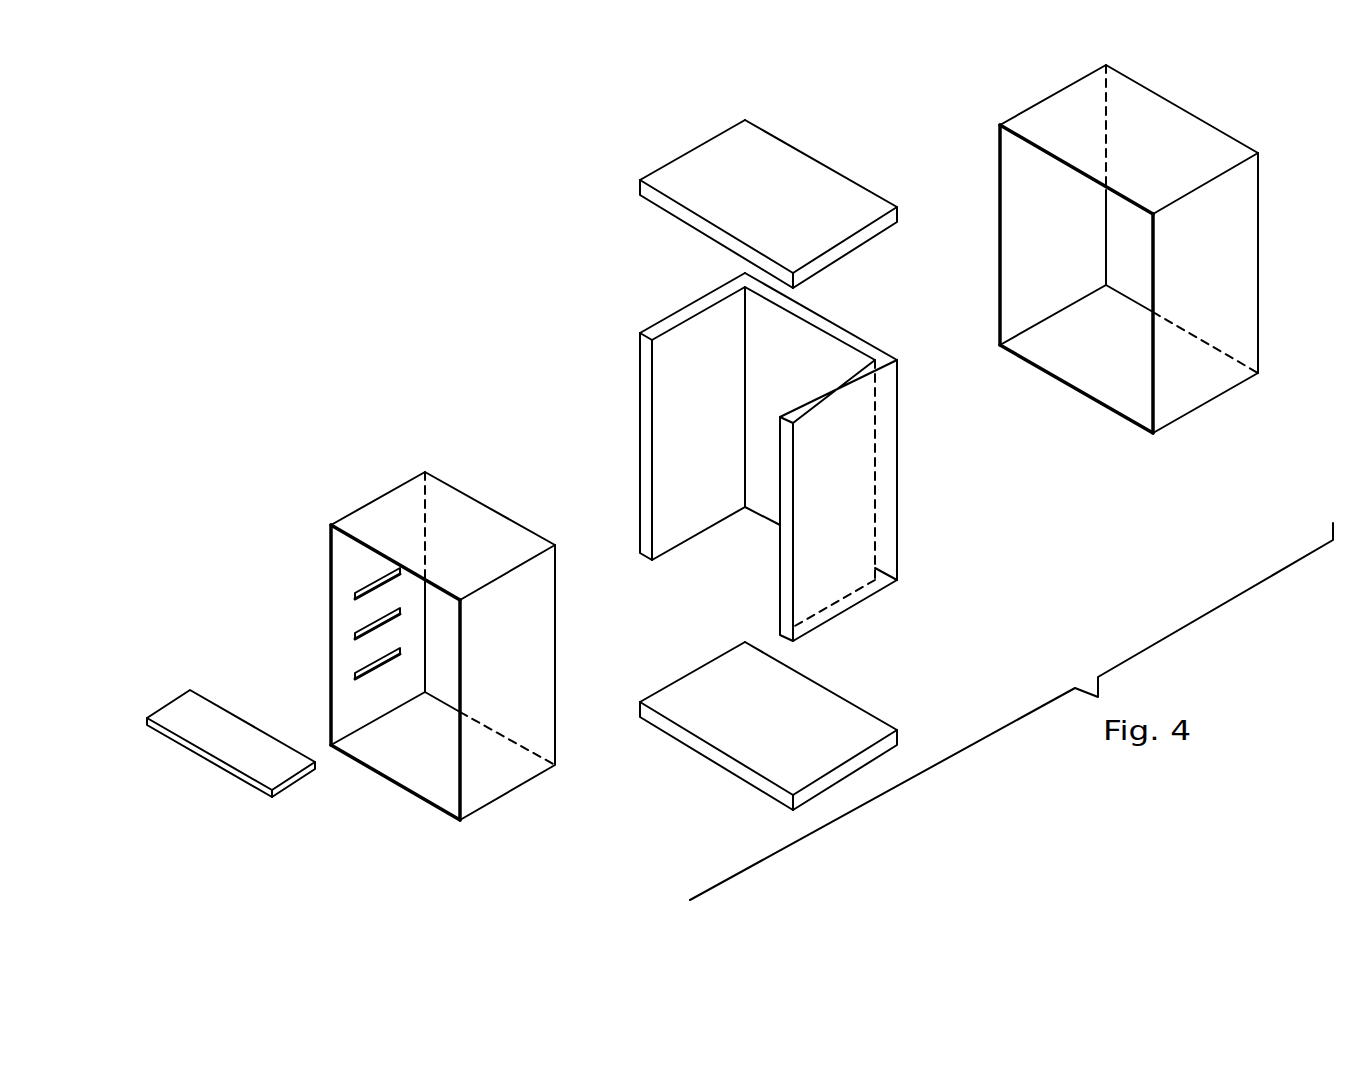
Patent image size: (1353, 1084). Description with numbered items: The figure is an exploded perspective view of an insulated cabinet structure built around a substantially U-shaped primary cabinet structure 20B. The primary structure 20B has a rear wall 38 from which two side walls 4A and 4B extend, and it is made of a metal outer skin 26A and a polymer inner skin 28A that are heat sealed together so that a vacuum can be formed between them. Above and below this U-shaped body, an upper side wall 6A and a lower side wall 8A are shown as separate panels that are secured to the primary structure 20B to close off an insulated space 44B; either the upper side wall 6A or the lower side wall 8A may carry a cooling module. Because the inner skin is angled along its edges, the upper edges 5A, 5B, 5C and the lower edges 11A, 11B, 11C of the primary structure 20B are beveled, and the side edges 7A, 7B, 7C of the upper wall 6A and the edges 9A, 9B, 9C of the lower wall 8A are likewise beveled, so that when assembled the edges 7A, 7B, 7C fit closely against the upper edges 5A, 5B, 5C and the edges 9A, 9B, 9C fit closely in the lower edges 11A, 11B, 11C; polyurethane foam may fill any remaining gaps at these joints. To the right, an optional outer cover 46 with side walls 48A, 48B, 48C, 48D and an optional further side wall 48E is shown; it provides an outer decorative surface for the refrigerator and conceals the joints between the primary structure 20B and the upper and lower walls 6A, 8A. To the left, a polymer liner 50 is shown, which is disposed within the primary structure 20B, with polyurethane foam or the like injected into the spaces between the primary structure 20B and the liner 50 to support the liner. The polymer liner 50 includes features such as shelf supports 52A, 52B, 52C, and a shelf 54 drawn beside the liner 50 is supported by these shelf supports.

The upper side wall 6A is at (750, 180).
The side edge of upper wall 7A is at (656, 167).
The side edge of upper wall 7B is at (828, 163).
The side edge of upper wall 7C is at (858, 240).
The primary cabinet structure 20B is at (757, 438).
The upper edge of primary structure 5A is at (700, 283).
The rear wall 38 is at (825, 315).
The upper edge of primary structure 5B is at (855, 335).
The upper edge of primary structure 5C is at (833, 402).
The polymer inner skin 28A is at (640, 398).
The side wall 4A is at (644, 398).
The insulated space 44B is at (692, 465).
The metal outer skin 26A is at (815, 426).
The lower edge of primary structure 11A is at (708, 532).
The lower edge of primary structure 11B is at (758, 517).
The side wall 4B is at (845, 500).
The lower edge of primary structure 11C is at (868, 602).
The lower side wall 8A is at (779, 735).
The edge of lower wall 9A is at (695, 670).
The edge of lower wall 9B is at (815, 680).
The edge of lower wall 9C is at (822, 782).
The outer cover 46 is at (1127, 264).
The side wall of outer cover 48A is at (1102, 380).
The side wall of outer cover 48B is at (1198, 388).
The side wall of outer cover 48C is at (1155, 105).
The side wall of outer cover 48D is at (1008, 222).
The optional side wall of outer cover 48E is at (1130, 282).
The polymer liner 50 is at (390, 673).
The shelf support 52A is at (365, 586).
The shelf support 52B is at (363, 631).
The shelf support 52C is at (362, 668).
The shelf 54 is at (200, 728).